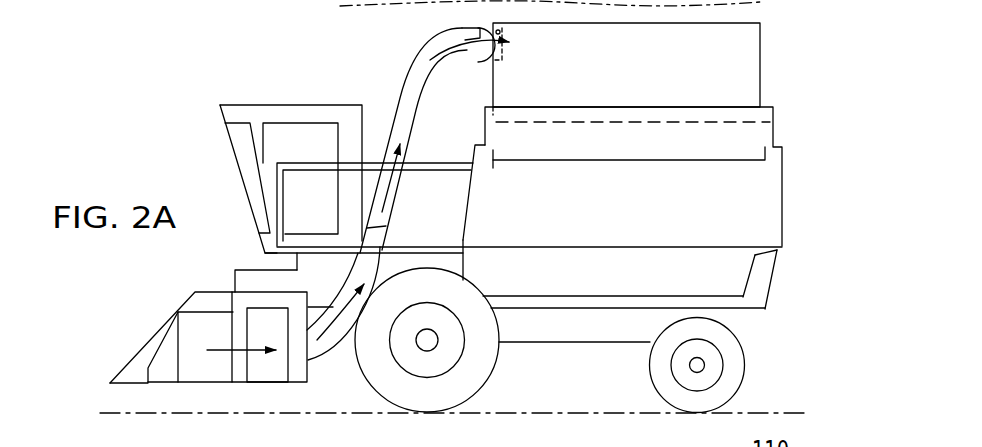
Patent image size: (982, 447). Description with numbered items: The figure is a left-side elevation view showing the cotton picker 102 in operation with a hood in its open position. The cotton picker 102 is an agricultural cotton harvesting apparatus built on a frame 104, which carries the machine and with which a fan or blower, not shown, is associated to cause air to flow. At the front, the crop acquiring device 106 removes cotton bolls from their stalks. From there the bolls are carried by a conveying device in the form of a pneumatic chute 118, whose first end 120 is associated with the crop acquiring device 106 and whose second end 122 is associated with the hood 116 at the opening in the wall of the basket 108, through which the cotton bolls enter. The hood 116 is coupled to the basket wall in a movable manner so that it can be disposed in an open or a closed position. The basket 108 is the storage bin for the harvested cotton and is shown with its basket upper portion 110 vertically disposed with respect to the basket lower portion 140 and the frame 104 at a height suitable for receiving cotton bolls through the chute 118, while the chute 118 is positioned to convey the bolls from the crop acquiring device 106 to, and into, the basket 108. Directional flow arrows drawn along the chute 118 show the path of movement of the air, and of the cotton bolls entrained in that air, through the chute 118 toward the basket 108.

The cotton picker 102 is at (121, 88).
The frame 104 is at (748, 312).
The crop acquiring device 106 is at (128, 319).
The basket 108 is at (819, 146).
The basket upper portion 110 is at (760, 67).
The hood 116 is at (485, 27).
The pneumatic chute 118 is at (423, 55).
The first end 120 is at (338, 352).
The second end 122 is at (462, 55).
The basket lower portion 140 is at (782, 197).